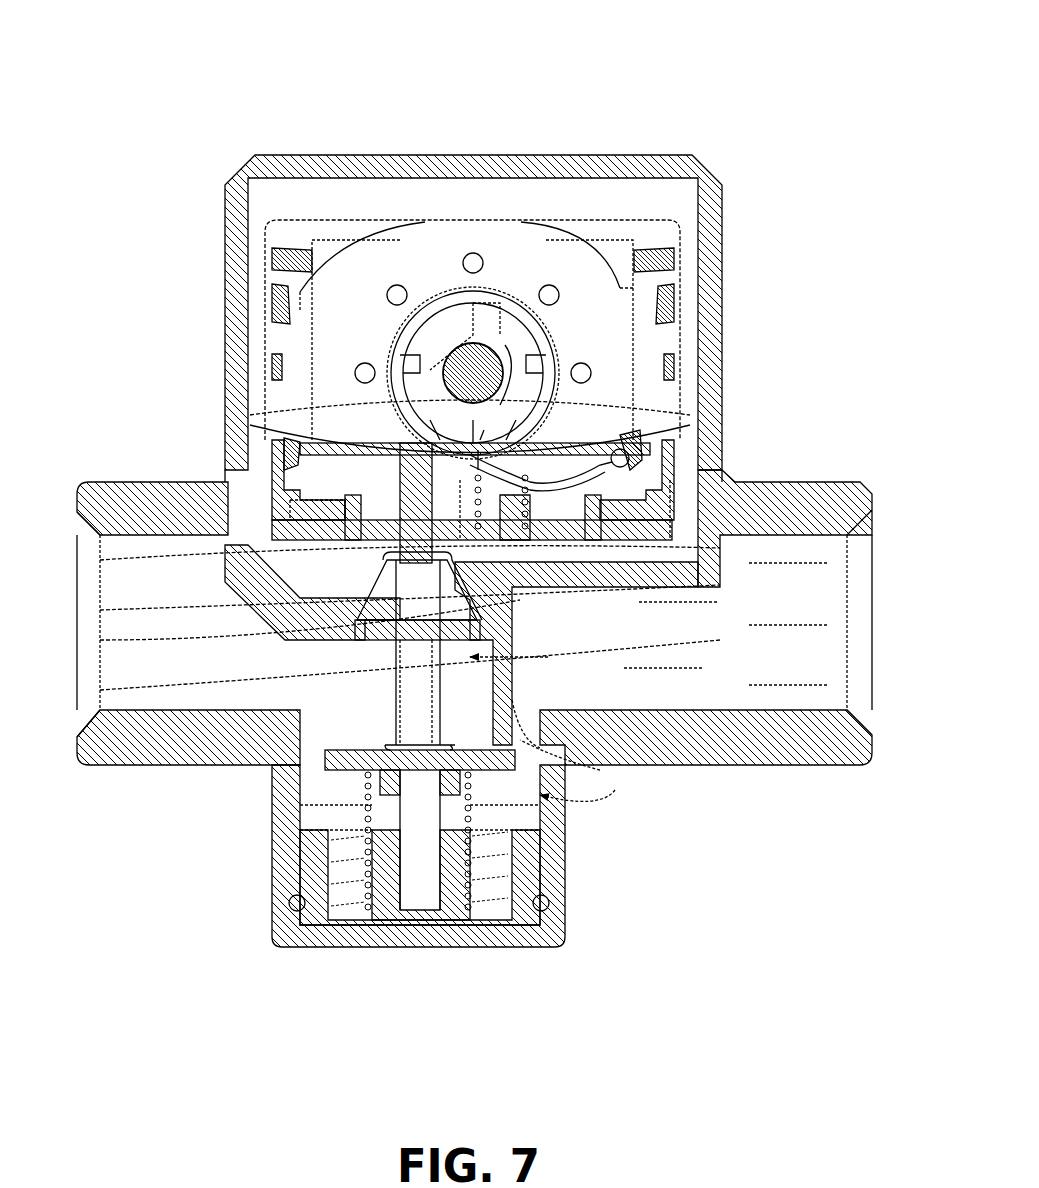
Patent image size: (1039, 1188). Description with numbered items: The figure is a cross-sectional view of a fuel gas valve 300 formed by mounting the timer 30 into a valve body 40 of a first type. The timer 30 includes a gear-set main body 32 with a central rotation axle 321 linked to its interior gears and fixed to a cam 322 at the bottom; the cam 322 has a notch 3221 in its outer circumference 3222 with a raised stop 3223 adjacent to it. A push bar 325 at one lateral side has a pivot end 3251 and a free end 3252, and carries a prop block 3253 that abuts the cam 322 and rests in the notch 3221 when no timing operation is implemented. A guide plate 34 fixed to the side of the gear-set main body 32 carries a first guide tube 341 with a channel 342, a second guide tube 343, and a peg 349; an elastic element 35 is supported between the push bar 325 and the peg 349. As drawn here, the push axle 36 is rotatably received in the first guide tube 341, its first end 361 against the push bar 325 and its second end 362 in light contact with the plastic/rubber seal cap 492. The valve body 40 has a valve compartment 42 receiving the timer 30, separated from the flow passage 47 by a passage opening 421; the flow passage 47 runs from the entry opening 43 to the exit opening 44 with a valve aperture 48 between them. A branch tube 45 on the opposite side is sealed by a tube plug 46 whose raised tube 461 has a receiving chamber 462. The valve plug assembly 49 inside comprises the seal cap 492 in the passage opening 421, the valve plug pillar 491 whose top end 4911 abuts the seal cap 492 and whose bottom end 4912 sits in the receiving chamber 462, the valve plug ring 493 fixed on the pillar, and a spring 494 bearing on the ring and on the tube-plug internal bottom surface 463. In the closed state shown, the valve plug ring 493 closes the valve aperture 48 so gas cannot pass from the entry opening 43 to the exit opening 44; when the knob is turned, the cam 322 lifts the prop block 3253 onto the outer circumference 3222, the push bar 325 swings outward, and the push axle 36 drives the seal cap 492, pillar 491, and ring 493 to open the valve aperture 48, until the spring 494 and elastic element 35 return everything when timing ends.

The fuel gas valve 300 is at (140, 92).
The timer 30 is at (473, 378).
The gear-set main body 32 is at (600, 225).
The rotation axle 321 is at (495, 250).
The cam 322 is at (466, 330).
The notch 3221 is at (415, 438).
The outer circumference 3222 is at (700, 398).
The stop 3223 is at (318, 378).
The push bar 325 is at (700, 432).
The pivot end 3251 is at (700, 452).
The free end 3252 is at (290, 446).
The prop block 3253 is at (688, 370).
The guide plate 34 is at (80, 497).
The first guide tube 341 is at (240, 552).
The channel 342 is at (750, 560).
The second guide tube 343 is at (95, 520).
The peg 349 is at (700, 508).
The elastic element 35 is at (722, 463).
The push axle 36 is at (280, 463).
The first end 361 is at (215, 471).
The second end 362 is at (322, 600).
The valve body 40 is at (735, 242).
The valve compartment 42 is at (582, 195).
The passage opening 421 is at (330, 650).
The entry opening 43 is at (840, 622).
The exit opening 44 is at (97, 596).
The branch tube 45 is at (550, 850).
The tube plug 46 is at (339, 948).
The raised tube 461 is at (540, 895).
The receiving chamber 462 is at (418, 948).
The tube-plug internal bottom surface 463 is at (492, 948).
The flow passage 47 is at (340, 675).
The valve aperture 48 is at (622, 765).
The valve plug assembly 49 is at (760, 660).
The valve plug pillar 491 is at (700, 755).
The valve plug pillar top end 4911 is at (700, 600).
The valve plug pillar bottom end 4912 is at (560, 870).
The plastic/rubber seal cap 492 is at (330, 630).
The valve plug ring 493 is at (380, 782).
The spring 494 is at (540, 810).